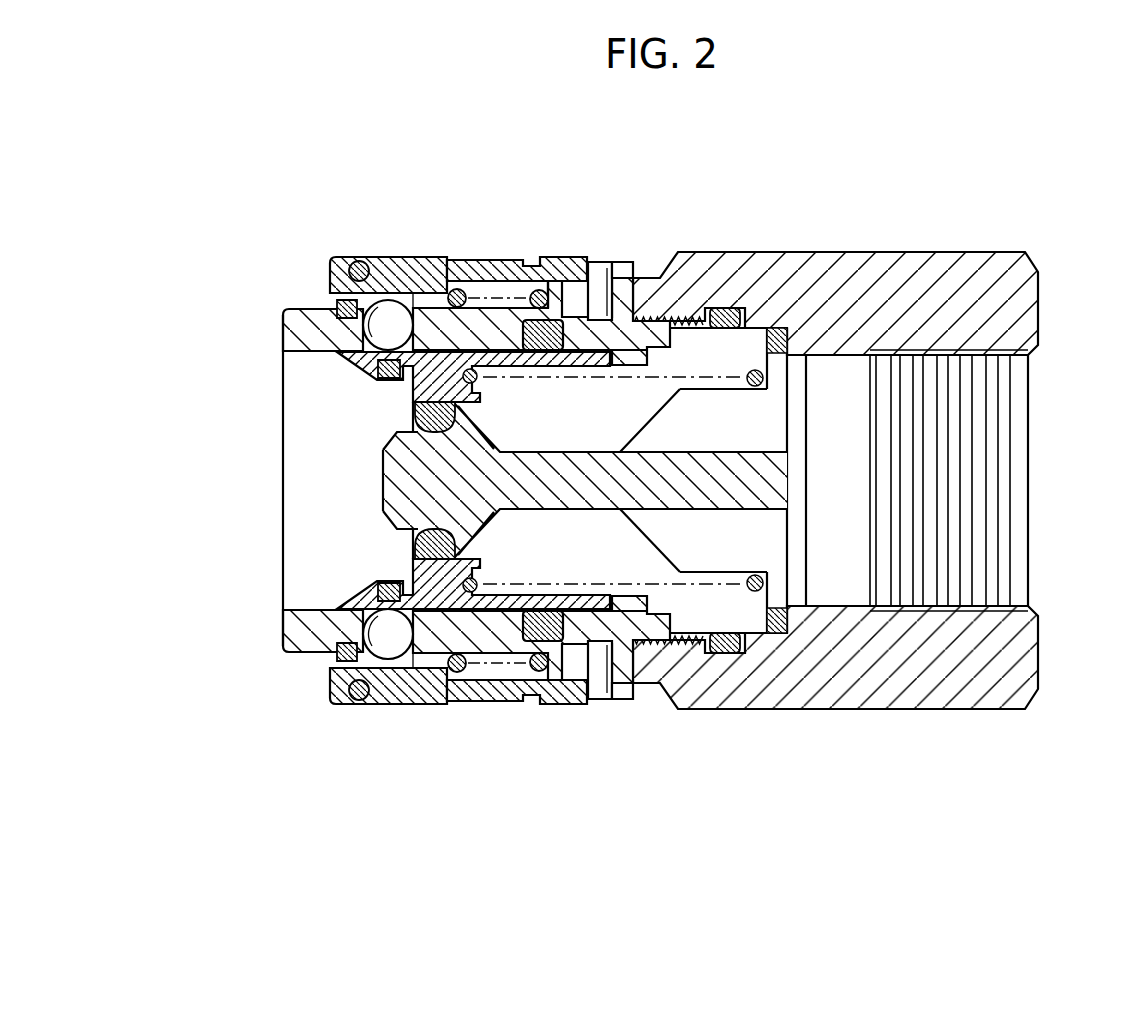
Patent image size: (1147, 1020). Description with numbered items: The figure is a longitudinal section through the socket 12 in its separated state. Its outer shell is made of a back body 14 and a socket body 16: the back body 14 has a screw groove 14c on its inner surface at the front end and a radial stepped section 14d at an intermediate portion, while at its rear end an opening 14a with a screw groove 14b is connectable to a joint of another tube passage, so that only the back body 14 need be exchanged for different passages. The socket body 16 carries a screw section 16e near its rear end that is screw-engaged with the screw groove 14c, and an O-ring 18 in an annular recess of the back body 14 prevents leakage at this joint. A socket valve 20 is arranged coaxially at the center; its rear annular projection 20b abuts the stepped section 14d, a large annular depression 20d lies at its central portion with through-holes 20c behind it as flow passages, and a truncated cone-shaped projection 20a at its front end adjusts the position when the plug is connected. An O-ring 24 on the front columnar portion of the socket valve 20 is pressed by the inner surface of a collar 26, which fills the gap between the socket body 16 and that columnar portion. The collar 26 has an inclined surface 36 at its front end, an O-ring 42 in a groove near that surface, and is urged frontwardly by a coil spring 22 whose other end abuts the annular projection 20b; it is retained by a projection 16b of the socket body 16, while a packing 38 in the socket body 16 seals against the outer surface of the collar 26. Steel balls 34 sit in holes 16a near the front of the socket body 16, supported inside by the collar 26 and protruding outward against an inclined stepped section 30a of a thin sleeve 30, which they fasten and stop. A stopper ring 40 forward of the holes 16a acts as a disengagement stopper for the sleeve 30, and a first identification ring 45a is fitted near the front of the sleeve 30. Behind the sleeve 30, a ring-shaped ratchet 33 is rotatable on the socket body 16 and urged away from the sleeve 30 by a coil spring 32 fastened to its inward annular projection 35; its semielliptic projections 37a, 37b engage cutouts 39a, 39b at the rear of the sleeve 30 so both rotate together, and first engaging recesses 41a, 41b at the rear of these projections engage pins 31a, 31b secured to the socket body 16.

The socket 12 is at (903, 194).
The back body 14 is at (870, 292).
The opening 14a is at (1015, 505).
The screw groove 14b is at (1030, 372).
The screw groove 14c is at (664, 314).
The stepped section 14d is at (790, 380).
The socket body 16 is at (446, 260).
The holes 16a is at (357, 257).
The projection 16b is at (568, 368).
The screw section 16e is at (640, 590).
The O-ring 18 is at (702, 644).
The socket valve 20 is at (386, 465).
The truncated cone-shaped projection 20a is at (383, 490).
The annular projection 20b is at (758, 370).
The through-holes 20c is at (760, 592).
The depression 20d is at (660, 556).
The coil spring 22 is at (748, 322).
The O-ring 24 is at (422, 546).
The collar 26 is at (437, 611).
The sleeve 30 is at (400, 257).
The stepped section 30a is at (425, 704).
The pin 31a is at (624, 262).
The pin 31b is at (622, 700).
The coil spring 32 is at (468, 259).
The ratchet 33 is at (543, 257).
The steel balls 34 is at (383, 300).
The annular projection 35 is at (598, 366).
The inclined surface 36 is at (340, 372).
The projection 37a is at (563, 258).
The projection 37b is at (565, 703).
The packing 38 is at (540, 609).
The cutout 39a is at (518, 270).
The cutout 39b is at (527, 704).
The stopper ring 40 is at (337, 305).
The first engaging recess 41a is at (600, 262).
The first engaging recess 41b is at (600, 700).
The O-ring 42 is at (386, 382).
The first identification ring 45a is at (358, 702).